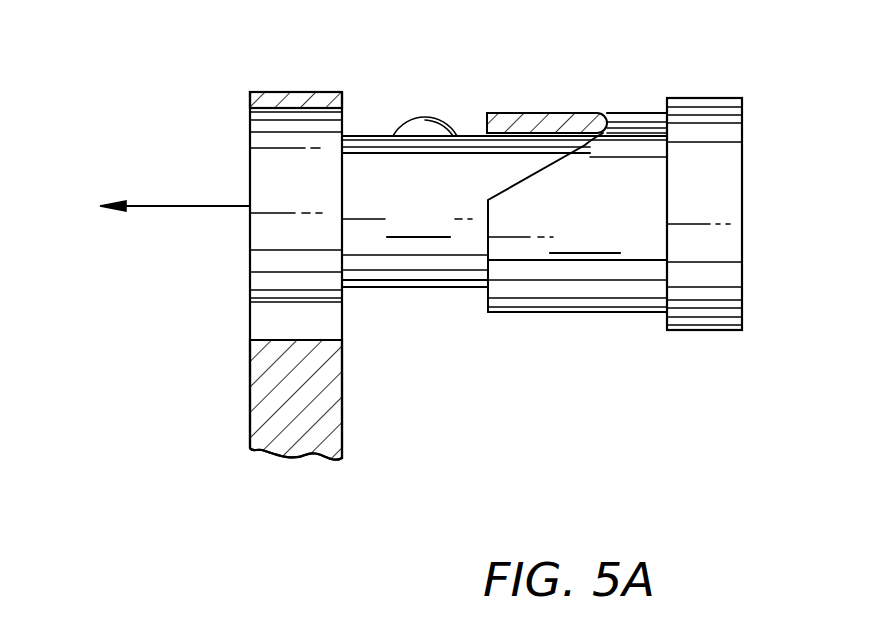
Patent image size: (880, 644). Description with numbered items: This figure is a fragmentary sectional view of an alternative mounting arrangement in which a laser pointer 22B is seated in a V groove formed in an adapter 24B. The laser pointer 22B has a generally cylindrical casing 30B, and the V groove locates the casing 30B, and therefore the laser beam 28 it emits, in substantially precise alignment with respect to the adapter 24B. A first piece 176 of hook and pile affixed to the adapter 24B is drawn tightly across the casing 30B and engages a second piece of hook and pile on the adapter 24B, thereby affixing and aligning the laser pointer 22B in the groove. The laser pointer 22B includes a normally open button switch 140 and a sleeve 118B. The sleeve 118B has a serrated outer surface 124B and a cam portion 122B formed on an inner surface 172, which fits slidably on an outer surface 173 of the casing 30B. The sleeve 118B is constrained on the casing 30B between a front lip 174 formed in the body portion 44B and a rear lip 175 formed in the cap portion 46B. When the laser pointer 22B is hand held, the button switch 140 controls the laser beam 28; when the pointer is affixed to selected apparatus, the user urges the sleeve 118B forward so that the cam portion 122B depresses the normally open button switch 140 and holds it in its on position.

The laser beam 28 is at (176, 204).
The first piece of hook and pile 176 is at (328, 90).
The front lip 174 is at (345, 127).
The normally open button switch 140 is at (420, 113).
The serrated outer surface 124B is at (563, 112).
The cam portion 122B is at (483, 143).
The inner surface 172 is at (552, 153).
The casing 30B is at (407, 221).
The sleeve 118B is at (577, 252).
The cap portion 46B is at (727, 240).
The body portion 44B is at (270, 273).
The laser pointer 22B is at (363, 290).
The outer surface 173 is at (467, 290).
The adapter 24B is at (340, 427).
The rear lip 175 is at (663, 322).